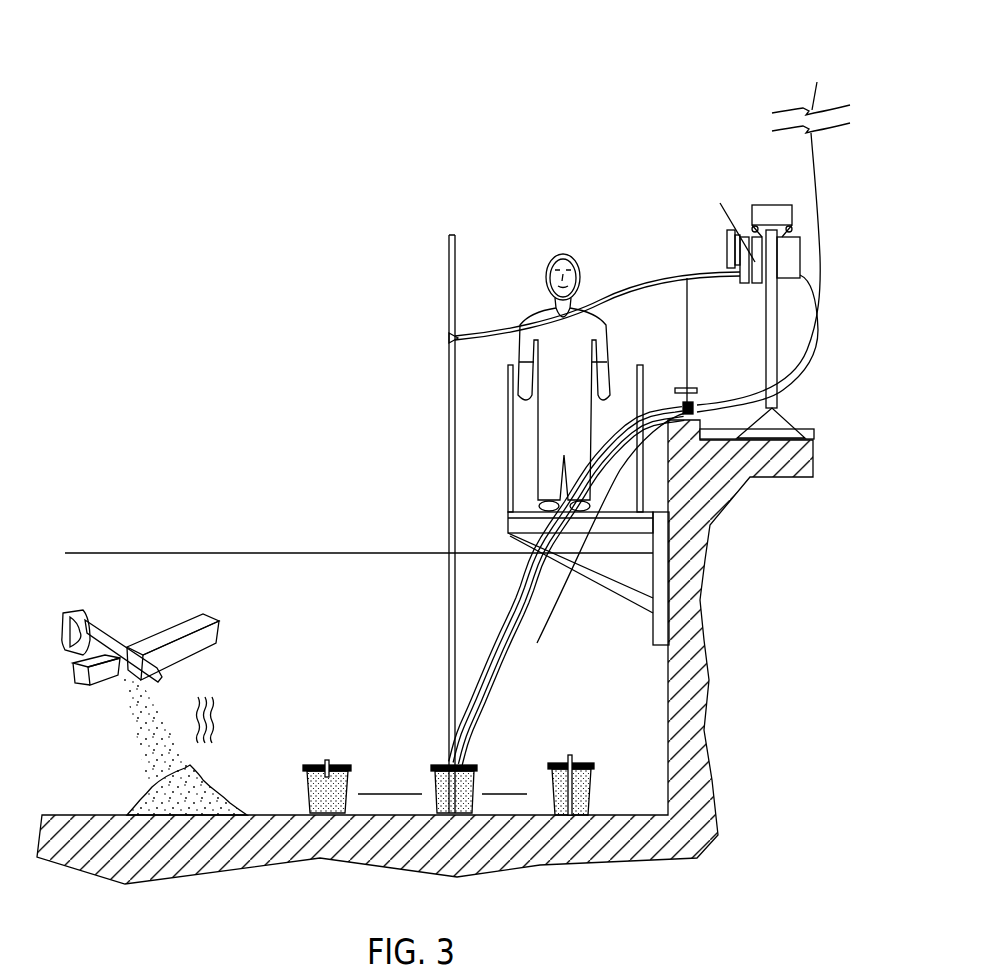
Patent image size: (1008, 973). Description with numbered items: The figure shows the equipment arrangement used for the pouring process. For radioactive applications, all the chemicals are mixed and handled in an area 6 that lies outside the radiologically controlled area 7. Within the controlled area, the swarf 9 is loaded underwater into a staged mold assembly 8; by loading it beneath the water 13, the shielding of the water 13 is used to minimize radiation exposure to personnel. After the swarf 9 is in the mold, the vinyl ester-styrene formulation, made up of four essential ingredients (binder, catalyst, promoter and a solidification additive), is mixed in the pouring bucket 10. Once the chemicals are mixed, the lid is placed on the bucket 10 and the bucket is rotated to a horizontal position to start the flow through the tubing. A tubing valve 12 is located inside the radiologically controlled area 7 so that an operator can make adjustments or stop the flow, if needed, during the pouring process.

The area outside radiologically controlled area 6 is at (778, 92).
The radiologically controlled area 7 is at (493, 215).
The staged mold assembly 8 is at (317, 770).
The swarf 9 is at (145, 782).
The pouring bucket 10 is at (790, 258).
The tubing valve 12 is at (527, 330).
The water 13 is at (250, 552).